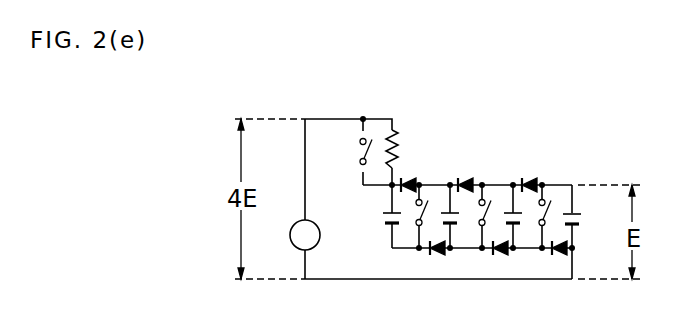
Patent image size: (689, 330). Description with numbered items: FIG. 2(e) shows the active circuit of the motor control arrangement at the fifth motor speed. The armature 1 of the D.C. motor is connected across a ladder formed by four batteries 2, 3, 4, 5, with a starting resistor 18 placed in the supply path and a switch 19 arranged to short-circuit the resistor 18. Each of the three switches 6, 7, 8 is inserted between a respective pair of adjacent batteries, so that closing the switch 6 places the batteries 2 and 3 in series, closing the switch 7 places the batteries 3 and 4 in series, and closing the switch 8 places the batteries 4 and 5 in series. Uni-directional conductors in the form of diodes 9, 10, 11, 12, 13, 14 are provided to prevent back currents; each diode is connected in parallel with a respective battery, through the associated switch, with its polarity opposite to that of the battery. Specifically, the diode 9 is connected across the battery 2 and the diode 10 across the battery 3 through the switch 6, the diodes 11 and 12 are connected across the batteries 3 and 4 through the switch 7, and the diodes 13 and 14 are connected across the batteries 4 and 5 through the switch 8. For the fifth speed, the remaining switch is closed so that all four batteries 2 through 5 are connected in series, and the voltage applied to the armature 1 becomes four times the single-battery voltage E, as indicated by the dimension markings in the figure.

The armature 1 is at (311, 250).
The battery 2 is at (386, 222).
The battery 3 is at (451, 224).
The battery 4 is at (514, 224).
The battery 5 is at (575, 223).
The switch 6 is at (423, 217).
The switch 7 is at (486, 217).
The switch 8 is at (547, 217).
The diode 9 is at (407, 178).
The diode 10 is at (436, 250).
The diode 11 is at (466, 178).
The diode 12 is at (498, 250).
The diode 13 is at (528, 178).
The diode 14 is at (557, 250).
The starting resistor 18 is at (396, 130).
The switch 19 is at (369, 150).